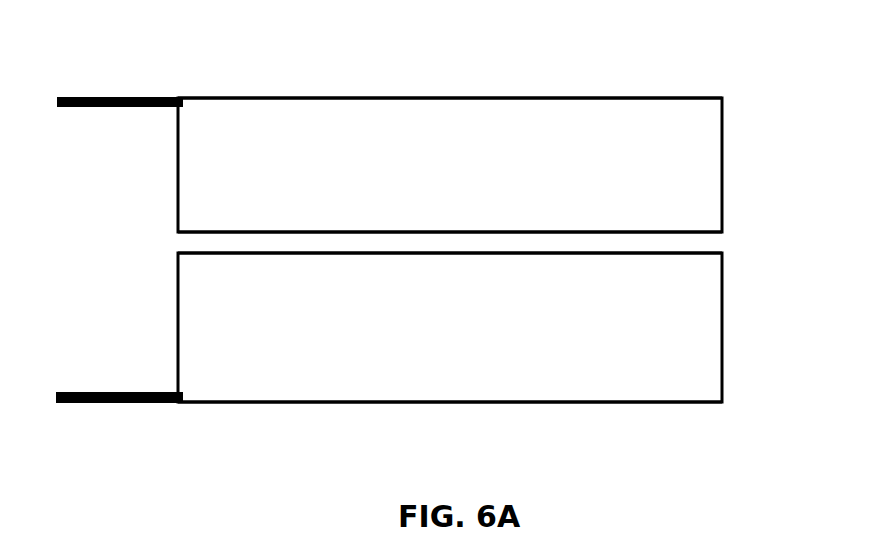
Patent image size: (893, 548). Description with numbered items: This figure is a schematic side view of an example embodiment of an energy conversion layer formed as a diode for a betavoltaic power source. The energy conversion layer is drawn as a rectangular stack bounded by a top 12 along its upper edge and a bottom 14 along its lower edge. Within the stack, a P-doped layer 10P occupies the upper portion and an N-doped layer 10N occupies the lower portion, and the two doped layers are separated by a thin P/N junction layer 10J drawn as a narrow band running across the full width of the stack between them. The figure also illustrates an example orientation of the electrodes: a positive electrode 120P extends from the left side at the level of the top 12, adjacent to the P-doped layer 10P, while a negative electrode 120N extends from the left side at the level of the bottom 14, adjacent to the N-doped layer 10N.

The top 12 is at (662, 74).
The bottom 14 is at (679, 413).
The P-doped layer 10P is at (481, 175).
The N-doped layer 10N is at (483, 330).
The P/N junction layer 10J is at (722, 242).
The positive electrode 120P is at (141, 97).
The negative electrode 120N is at (153, 403).